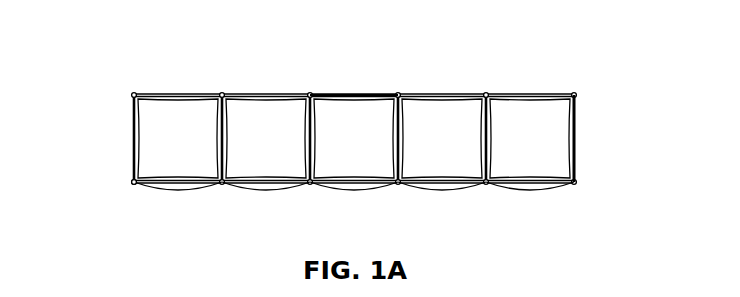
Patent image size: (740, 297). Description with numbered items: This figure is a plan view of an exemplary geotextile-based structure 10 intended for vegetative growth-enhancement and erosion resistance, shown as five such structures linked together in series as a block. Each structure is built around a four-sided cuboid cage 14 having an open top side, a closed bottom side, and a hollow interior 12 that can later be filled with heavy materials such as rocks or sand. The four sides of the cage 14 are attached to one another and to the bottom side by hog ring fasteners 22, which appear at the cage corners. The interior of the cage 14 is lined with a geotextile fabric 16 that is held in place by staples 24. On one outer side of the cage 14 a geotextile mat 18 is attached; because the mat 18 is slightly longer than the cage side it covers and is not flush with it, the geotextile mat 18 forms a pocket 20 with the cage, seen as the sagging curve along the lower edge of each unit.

The geotextile-based structure 10 is at (158, 50).
The hollow interior 12 is at (275, 132).
The cuboid cage 14 is at (352, 94).
The geotextile fabric 16 is at (520, 100).
The geotextile mat 18 is at (442, 190).
The pocket 20 is at (268, 189).
The hog ring fasteners 22 is at (133, 184).
The staples 24 is at (577, 138).